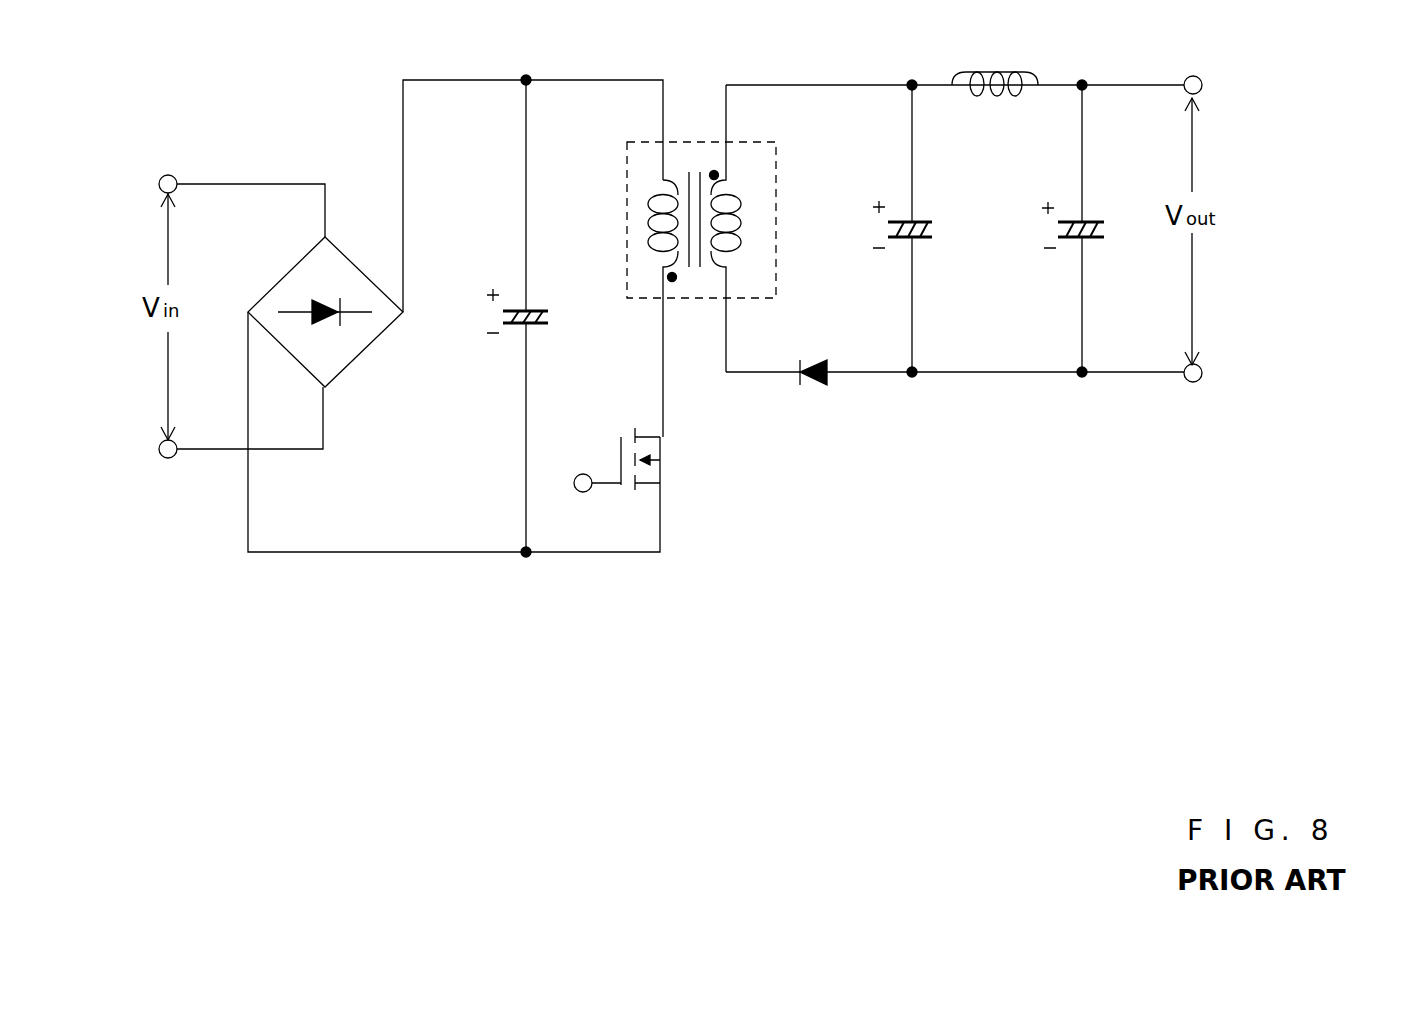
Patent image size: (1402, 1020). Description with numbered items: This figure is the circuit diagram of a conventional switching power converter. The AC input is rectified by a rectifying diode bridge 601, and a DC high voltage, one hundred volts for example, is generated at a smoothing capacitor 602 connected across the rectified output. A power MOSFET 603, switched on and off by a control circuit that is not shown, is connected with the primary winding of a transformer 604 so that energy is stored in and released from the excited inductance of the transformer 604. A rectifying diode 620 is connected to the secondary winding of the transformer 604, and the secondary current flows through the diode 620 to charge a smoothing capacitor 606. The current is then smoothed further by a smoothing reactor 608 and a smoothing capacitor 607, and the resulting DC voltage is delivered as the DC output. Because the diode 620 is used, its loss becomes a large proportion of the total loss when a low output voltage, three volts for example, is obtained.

The rectifying diode bridge 601 is at (297, 285).
The smoothing capacitor 602 is at (550, 316).
The power MOSFET 603 is at (653, 452).
The transformer 604 is at (693, 142).
The smoothing capacitor 606 is at (937, 225).
The smoothing capacitor 607 is at (1053, 226).
The smoothing reactor 608 is at (1000, 63).
The rectifying diode 620 is at (820, 392).